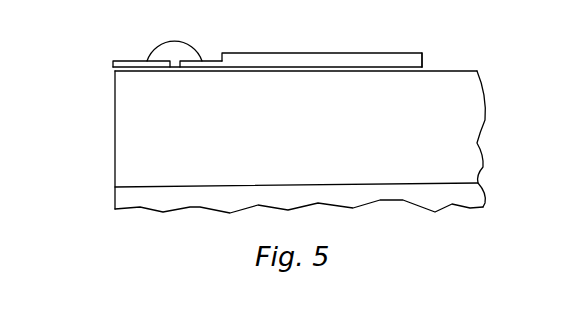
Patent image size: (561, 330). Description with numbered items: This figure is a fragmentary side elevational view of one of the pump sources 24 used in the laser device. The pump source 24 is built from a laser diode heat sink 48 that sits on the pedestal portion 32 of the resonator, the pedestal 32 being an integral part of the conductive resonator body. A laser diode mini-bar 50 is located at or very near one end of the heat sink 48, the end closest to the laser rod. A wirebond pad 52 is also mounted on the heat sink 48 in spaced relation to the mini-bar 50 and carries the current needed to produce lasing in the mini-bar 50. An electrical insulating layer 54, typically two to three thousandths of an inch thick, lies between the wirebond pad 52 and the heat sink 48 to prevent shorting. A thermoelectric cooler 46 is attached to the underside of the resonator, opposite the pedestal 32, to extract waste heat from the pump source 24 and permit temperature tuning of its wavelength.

The pump source 24 is at (220, 35).
The pedestal portion 32 is at (133, 133).
The thermoelectric cooler 46 is at (128, 196).
The laser diode heat sink 48 is at (394, 70).
The laser diode mini-bar 50 is at (113, 64).
The wirebond pad 52 is at (335, 58).
The electrical insulating layer 54 is at (285, 68).